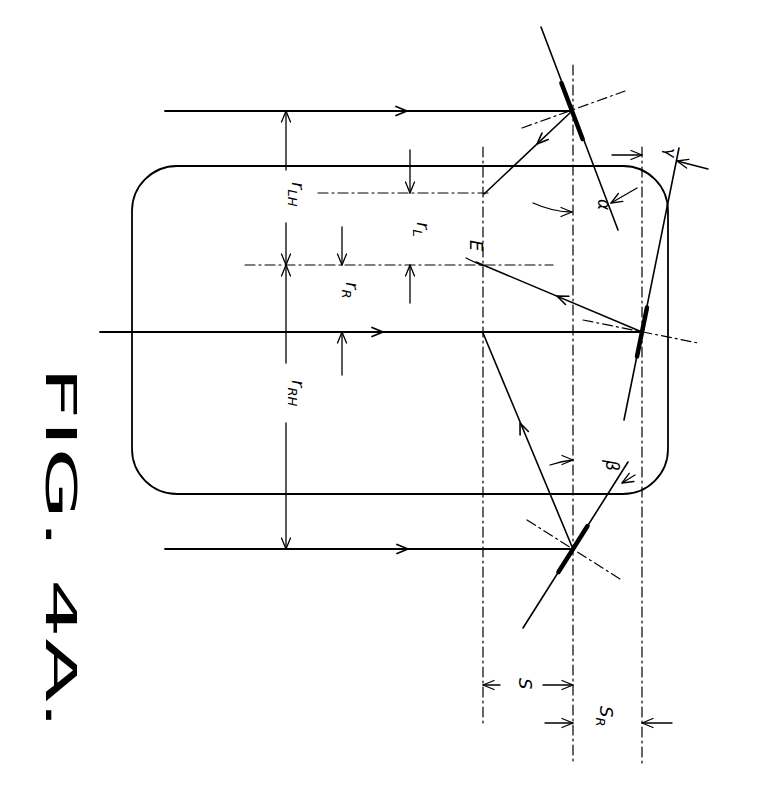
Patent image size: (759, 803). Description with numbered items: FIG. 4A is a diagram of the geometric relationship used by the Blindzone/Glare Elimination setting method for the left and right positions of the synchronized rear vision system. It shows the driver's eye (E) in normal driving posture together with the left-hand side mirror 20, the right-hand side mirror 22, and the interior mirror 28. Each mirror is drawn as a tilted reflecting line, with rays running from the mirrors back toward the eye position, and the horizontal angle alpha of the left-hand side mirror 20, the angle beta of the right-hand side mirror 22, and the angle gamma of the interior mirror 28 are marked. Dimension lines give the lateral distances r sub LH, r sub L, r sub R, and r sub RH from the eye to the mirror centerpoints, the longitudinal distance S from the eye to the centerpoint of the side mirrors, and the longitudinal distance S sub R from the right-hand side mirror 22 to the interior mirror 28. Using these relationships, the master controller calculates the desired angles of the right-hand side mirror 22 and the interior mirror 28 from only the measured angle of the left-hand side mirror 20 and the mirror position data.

The left-hand side mirror 20 is at (572, 95).
The interior mirror 28 is at (645, 322).
The right-hand side mirror 22 is at (580, 540).